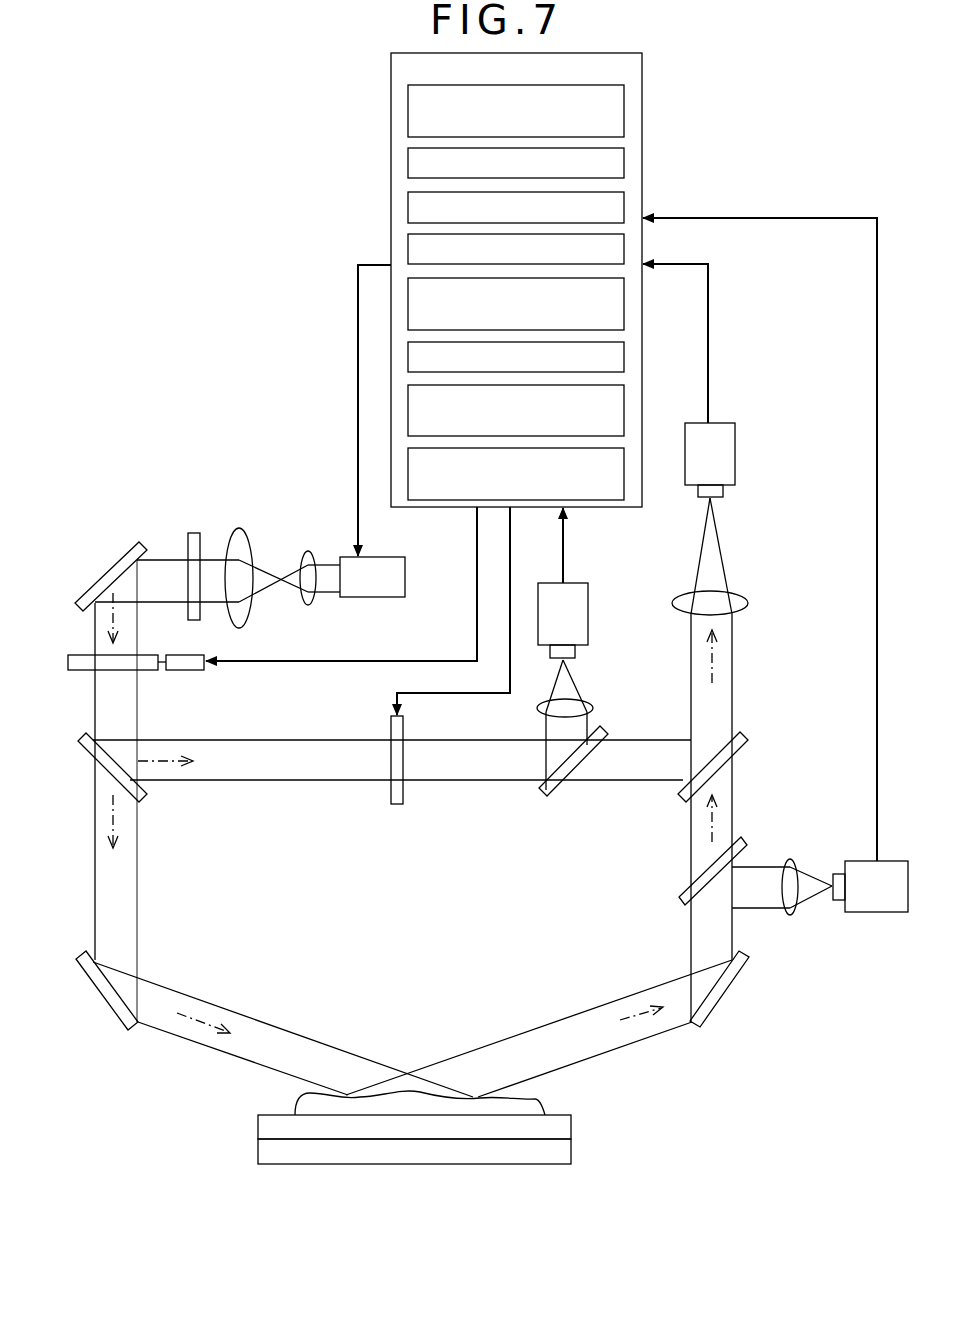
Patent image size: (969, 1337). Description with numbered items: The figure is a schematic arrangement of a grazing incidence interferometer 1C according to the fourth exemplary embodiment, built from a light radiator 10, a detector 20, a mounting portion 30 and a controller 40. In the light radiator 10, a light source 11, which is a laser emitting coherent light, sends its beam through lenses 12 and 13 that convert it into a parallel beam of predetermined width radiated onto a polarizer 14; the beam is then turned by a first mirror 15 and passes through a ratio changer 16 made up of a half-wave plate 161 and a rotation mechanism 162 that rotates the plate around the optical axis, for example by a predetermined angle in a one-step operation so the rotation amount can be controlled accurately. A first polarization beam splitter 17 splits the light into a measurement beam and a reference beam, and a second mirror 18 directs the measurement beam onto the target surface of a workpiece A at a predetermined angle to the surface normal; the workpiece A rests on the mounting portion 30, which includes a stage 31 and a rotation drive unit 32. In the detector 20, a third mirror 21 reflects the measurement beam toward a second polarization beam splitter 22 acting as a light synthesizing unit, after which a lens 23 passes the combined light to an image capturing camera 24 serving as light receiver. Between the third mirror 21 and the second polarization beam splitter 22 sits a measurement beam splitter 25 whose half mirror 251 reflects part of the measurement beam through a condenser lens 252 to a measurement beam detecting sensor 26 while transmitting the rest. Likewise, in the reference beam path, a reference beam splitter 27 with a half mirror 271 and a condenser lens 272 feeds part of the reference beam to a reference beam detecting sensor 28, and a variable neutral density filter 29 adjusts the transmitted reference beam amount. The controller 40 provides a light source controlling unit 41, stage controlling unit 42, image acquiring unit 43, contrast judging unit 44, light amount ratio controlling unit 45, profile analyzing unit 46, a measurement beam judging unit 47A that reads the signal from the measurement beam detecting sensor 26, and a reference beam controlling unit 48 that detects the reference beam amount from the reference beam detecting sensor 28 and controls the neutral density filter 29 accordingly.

The grazing incidence interferometer 1C is at (188, 205).
The light radiator 10 is at (90, 478).
The light source 11 is at (405, 578).
The lens 12 is at (309, 549).
The lens 13 is at (240, 527).
The polarizer 14 is at (194, 532).
The first mirror 15 is at (131, 543).
The ratio changer 16 is at (204, 691).
The λ/2 plate 161 is at (148, 671).
The rotation mechanism 162 is at (196, 671).
The first polarization beam splitter 17 is at (143, 797).
The second mirror 18 is at (118, 1023).
The detector 20 is at (776, 538).
The third mirror 21 is at (748, 960).
The second polarization beam splitter 22 is at (748, 746).
The lens 23 is at (748, 603).
The image capturing camera 24 is at (735, 452).
The measurement beam splitter 25 is at (630, 887).
The half mirror 251 is at (742, 838).
The condenser lens 252 is at (793, 859).
The measurement beam detecting sensor 26 is at (877, 912).
The reference beam splitter 27 is at (512, 810).
The half mirror 271 is at (548, 797).
The condenser lens 272 is at (585, 705).
The reference beam detecting sensor 28 is at (588, 612).
The neutral density filter 29 is at (397, 805).
The mounting portion 30 is at (384, 1177).
The stage 31 is at (258, 1127).
The rotation drive unit 32 is at (258, 1152).
The controller 40 is at (642, 60).
The light source controlling unit 41 is at (624, 112).
The stage controlling unit 42 is at (624, 163).
The image acquiring unit 43 is at (624, 205).
The contrast judging unit 44 is at (624, 250).
The light amount ratio controlling unit 45 is at (624, 303).
The profile analyzing unit 46 is at (624, 354).
The measurement beam judging unit 47A is at (624, 410).
The reference beam controlling unit 48 is at (624, 470).
The workpiece A is at (540, 1102).